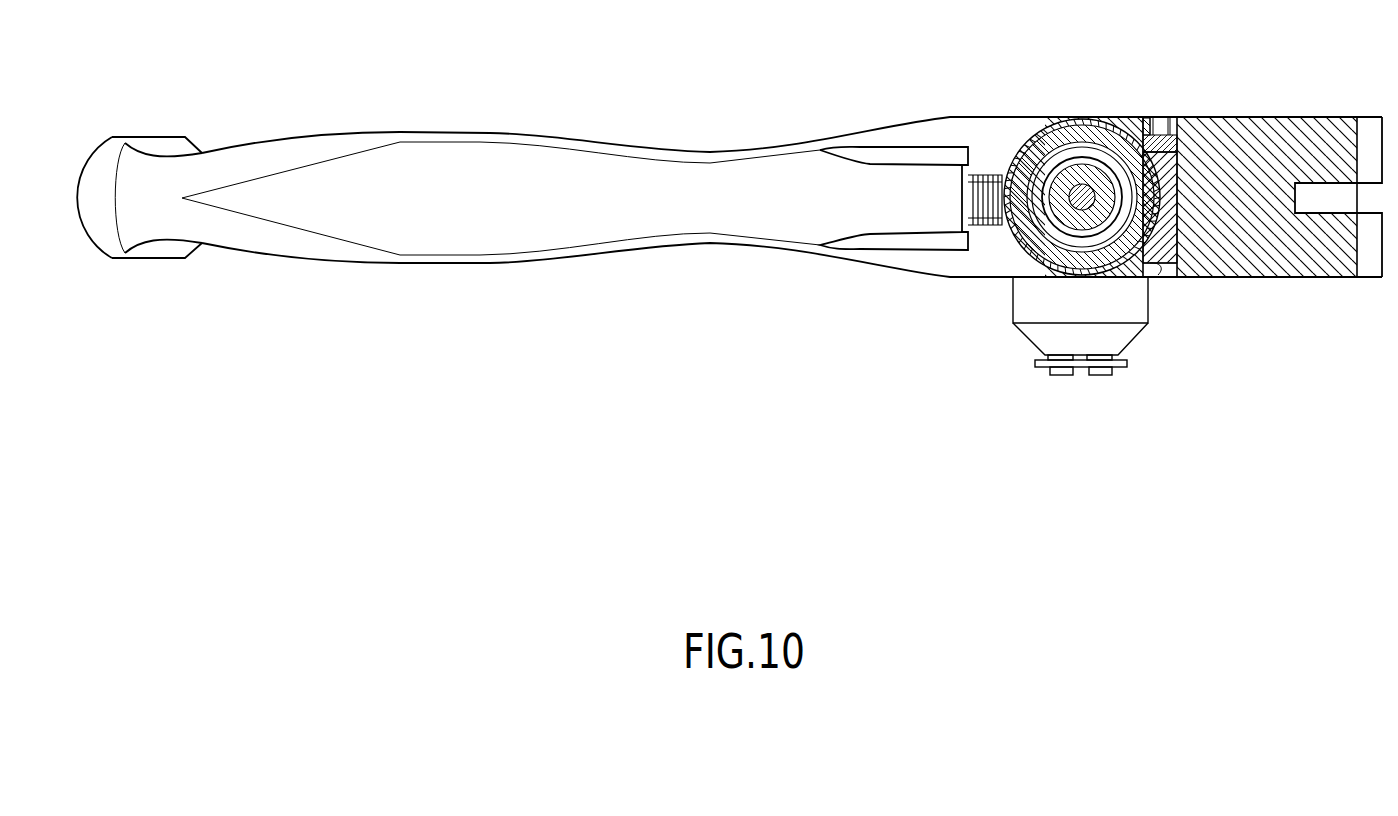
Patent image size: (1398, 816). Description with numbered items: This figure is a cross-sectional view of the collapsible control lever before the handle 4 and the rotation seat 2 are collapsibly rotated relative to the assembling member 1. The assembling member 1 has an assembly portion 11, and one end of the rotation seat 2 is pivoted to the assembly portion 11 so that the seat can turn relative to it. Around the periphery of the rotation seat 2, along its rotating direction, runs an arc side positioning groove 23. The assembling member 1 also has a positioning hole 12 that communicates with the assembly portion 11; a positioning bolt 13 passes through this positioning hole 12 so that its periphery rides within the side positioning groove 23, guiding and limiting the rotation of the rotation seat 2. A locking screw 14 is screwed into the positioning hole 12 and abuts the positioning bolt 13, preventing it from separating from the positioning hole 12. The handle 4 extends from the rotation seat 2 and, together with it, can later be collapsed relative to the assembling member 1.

The assembling member 1 is at (1318, 102).
The rotation seat 2 is at (1018, 243).
The handle 4 is at (636, 102).
The assembly portion 11 is at (1067, 265).
The positioning hole 12 is at (1178, 248).
The positioning bolt 13 is at (1155, 253).
The locking screw 14 is at (1178, 118).
The side positioning groove 23 is at (1092, 118).